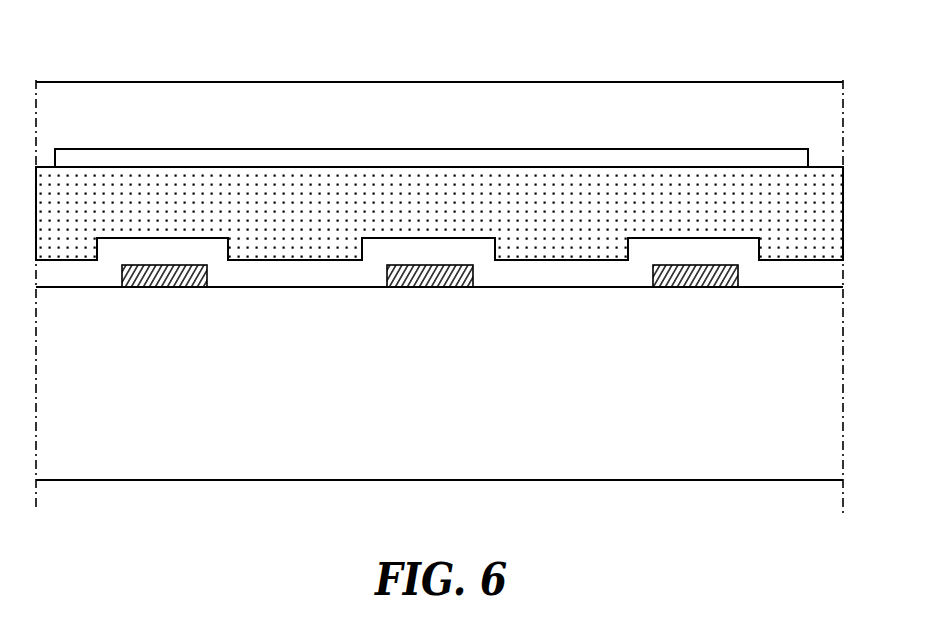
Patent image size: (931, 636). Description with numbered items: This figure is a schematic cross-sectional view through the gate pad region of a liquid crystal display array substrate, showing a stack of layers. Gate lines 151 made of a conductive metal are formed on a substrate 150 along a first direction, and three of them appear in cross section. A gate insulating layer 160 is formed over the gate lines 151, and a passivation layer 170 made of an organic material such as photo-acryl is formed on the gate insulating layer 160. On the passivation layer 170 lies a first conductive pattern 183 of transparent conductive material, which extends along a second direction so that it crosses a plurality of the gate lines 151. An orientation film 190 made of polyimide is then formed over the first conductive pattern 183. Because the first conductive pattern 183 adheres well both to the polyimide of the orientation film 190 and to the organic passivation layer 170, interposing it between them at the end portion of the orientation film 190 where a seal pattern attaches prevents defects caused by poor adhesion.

The substrate 150 is at (292, 447).
The gate lines 151 is at (176, 287).
The gate insulating layer 160 is at (588, 273).
The passivation layer 170 is at (162, 187).
The first conductive pattern 183 is at (572, 157).
The orientation film 190 is at (311, 103).